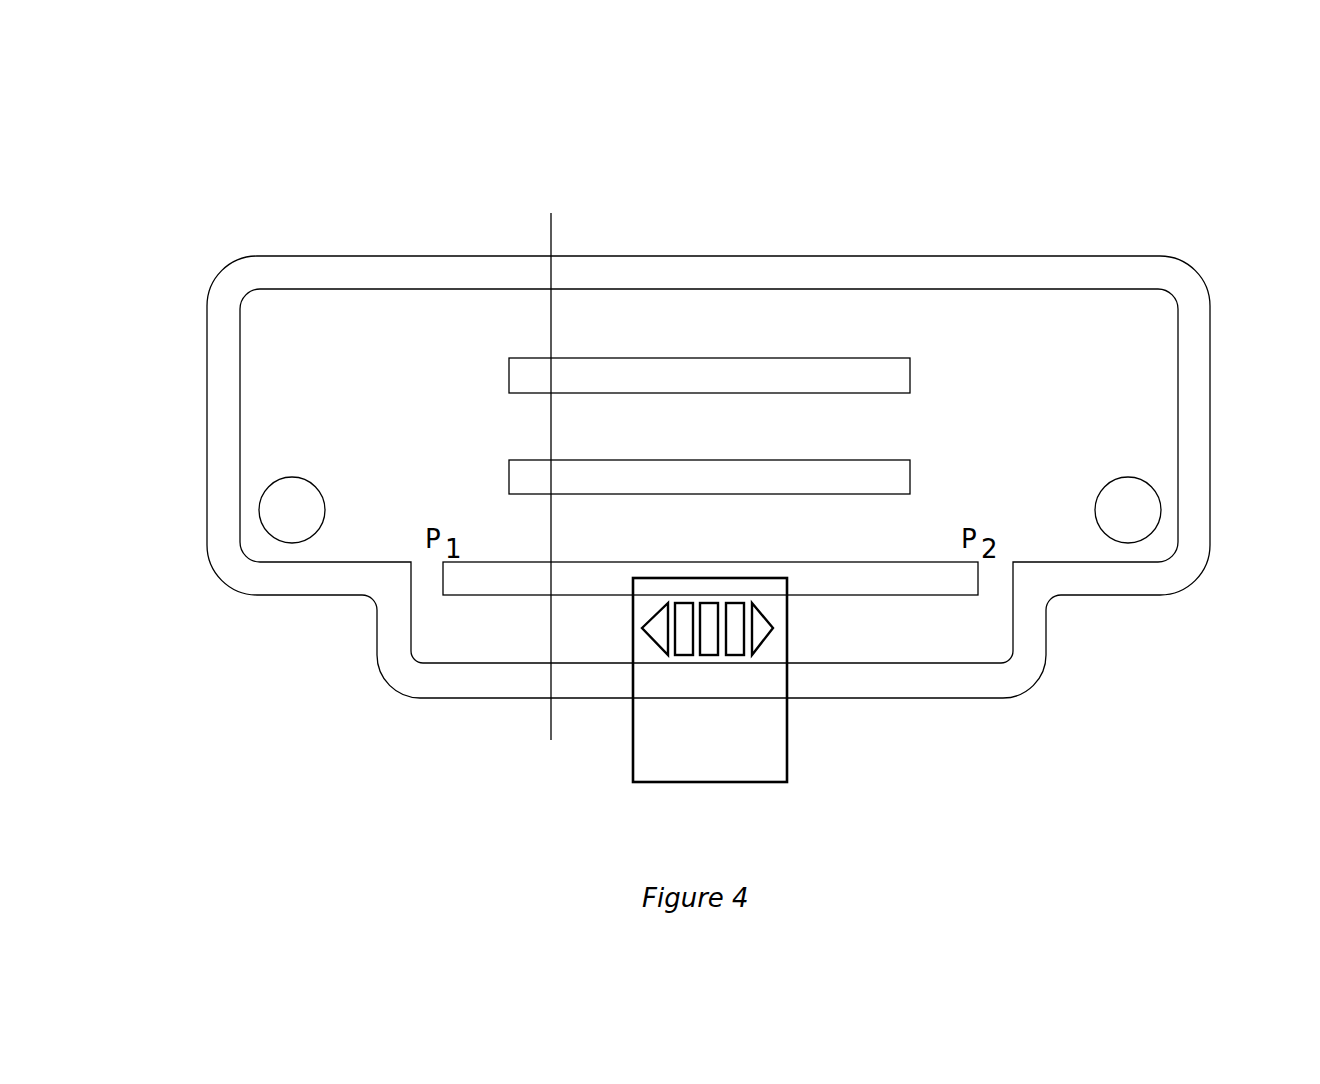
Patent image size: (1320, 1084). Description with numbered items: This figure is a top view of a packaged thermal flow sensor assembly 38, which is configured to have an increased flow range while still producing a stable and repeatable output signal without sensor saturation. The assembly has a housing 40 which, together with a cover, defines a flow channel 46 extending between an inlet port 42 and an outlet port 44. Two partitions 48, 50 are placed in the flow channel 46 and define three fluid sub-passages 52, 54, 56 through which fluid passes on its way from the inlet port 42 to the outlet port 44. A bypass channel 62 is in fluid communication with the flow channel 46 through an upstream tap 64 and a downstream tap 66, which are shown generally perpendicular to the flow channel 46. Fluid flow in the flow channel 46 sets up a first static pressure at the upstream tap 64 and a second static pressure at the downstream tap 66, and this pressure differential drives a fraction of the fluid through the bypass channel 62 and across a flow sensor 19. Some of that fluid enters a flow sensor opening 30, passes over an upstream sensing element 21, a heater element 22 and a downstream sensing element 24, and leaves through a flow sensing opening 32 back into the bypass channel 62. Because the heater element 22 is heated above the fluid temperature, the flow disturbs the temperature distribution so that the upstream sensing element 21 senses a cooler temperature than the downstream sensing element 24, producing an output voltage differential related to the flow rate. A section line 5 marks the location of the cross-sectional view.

The section line 5- 5 is at (551, 213).
The flow sensor 19 is at (655, 783).
The upstream sensing element 21 is at (685, 655).
The heater element 22 is at (709, 655).
The downstream sensing element 24 is at (735, 655).
The flow sensor opening 30 is at (642, 628).
The flow sensing opening 32 is at (773, 628).
The flow sensor assembly 38 is at (1113, 138).
The housing 40 is at (235, 258).
The inlet port 42 is at (272, 510).
The outlet port 44 is at (1150, 503).
The flow channel 46 is at (390, 326).
The partition 48 is at (880, 358).
The partition 50 is at (880, 460).
The fluid sub-passage 52 is at (848, 315).
The fluid sub-passage 54 is at (843, 417).
The fluid sub-passage 56 is at (843, 518).
The bypass channel 62 is at (901, 625).
The upstream tap 64 is at (430, 578).
The downstream tap 66 is at (997, 582).